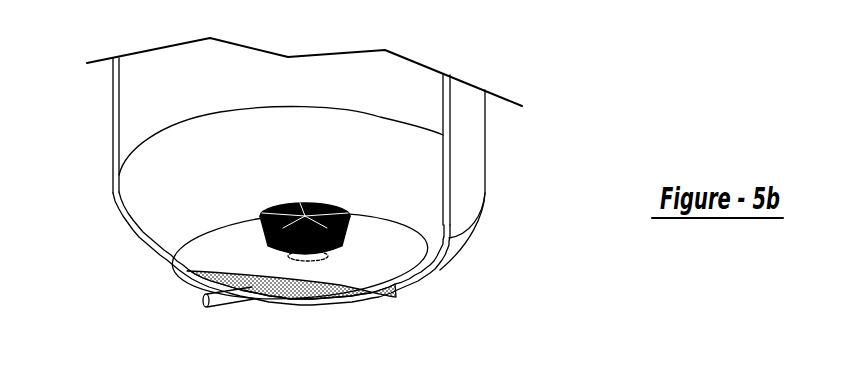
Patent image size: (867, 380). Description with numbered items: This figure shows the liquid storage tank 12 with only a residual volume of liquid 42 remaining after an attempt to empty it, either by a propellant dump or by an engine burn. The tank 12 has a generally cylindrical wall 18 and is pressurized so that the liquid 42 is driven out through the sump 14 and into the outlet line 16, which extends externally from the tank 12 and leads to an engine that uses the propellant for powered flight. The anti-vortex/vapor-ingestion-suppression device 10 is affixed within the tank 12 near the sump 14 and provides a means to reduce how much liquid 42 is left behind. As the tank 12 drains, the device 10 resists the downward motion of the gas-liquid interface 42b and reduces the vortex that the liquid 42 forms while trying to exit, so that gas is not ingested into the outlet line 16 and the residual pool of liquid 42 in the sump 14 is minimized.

The anti-vortex/vapor-ingestion-suppression device 10 is at (256, 232).
The tank 12 is at (466, 115).
The sump 14 is at (325, 257).
The outlet line 16 is at (215, 302).
The cylindrical wall 18 is at (117, 129).
The liquid 42 is at (188, 271).
The upper surface level 42b is at (382, 250).